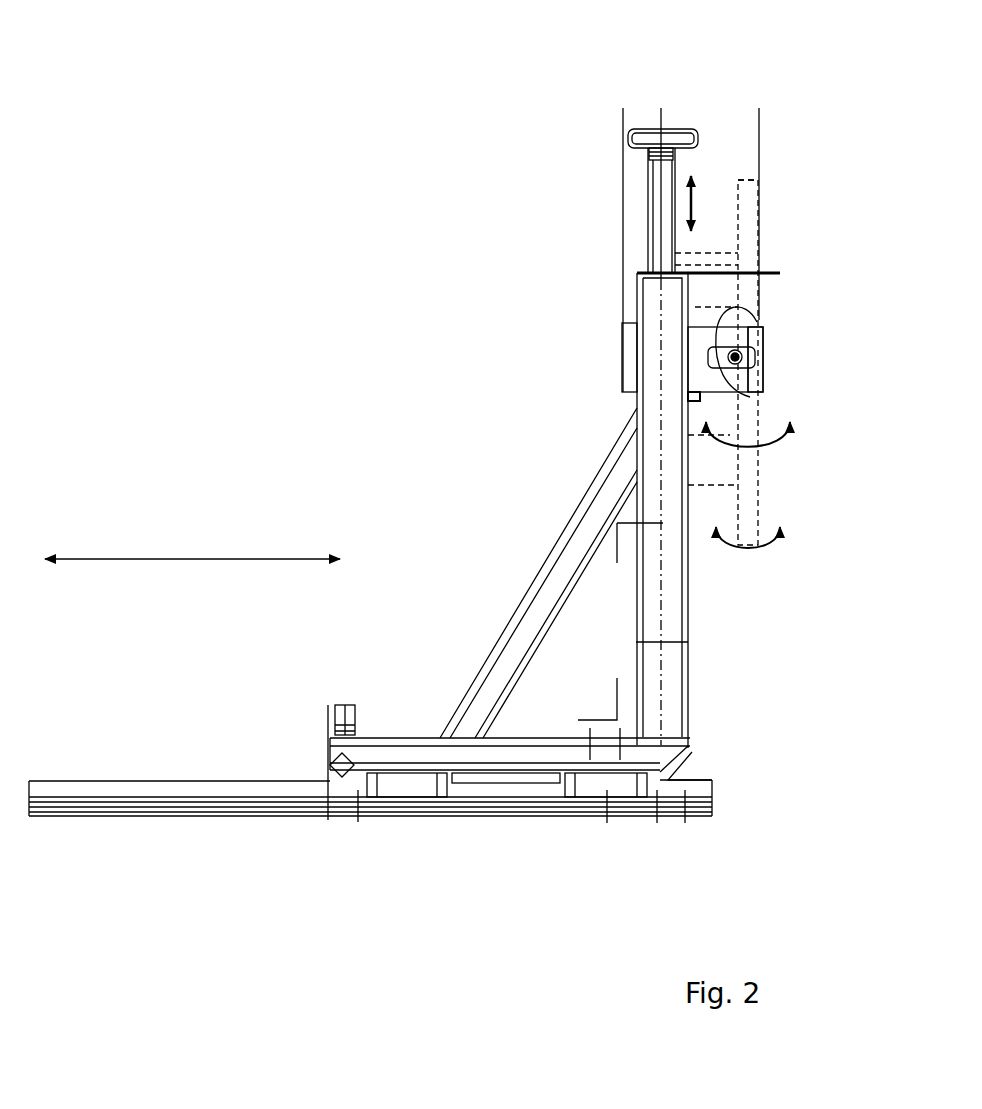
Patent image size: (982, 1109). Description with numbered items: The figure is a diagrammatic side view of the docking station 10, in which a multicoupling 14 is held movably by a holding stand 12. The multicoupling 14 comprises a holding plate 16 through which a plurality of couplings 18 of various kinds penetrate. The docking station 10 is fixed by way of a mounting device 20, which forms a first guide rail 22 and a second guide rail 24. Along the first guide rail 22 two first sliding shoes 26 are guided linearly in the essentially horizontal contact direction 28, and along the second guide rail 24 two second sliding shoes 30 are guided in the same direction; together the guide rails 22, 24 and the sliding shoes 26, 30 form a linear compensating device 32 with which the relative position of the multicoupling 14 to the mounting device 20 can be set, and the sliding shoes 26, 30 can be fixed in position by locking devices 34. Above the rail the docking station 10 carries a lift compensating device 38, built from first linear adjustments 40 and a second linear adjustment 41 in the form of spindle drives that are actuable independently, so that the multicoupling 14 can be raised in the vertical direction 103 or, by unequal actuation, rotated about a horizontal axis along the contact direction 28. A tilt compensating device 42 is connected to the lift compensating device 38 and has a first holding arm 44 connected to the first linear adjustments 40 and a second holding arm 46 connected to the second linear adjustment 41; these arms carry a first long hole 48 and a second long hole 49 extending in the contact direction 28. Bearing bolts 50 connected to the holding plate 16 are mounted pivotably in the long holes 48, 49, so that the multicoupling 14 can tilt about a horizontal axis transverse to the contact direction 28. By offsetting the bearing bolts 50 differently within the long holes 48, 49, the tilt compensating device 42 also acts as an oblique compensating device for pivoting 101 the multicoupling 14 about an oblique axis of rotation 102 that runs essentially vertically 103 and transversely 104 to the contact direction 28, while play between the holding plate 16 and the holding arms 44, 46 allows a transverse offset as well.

The docking station 10 is at (213, 222).
The holding stand 12 is at (528, 548).
The multicoupling 14 is at (764, 192).
The holding plate 16 is at (750, 186).
The couplings 18 is at (718, 256).
The mounting device 20 is at (90, 810).
The first guide rail 22 is at (370, 742).
The second guide rail 24 is at (73, 788).
The first sliding shoes 26 is at (496, 840).
The contact direction 28 is at (155, 555).
The second sliding shoes 30 is at (408, 790).
The linear compensating device 32 is at (412, 757).
The locking devices 34 is at (340, 766).
The lift compensating device 38 is at (641, 180).
The first linear adjustments 40 is at (578, 210).
The second linear adjustment 41 is at (650, 227).
The tilt compensating device 42 is at (757, 380).
The first holding arm 44 is at (783, 344).
The second holding arm 46 is at (818, 338).
The first long hole 48 is at (800, 395).
The second long hole 49 is at (750, 397).
The bearing bolts 50 is at (755, 357).
The pivoting 101 is at (760, 550).
The oblique axis of rotation 102 is at (733, 355).
The vertical direction 103 is at (692, 205).
The transverse direction 104 is at (765, 447).